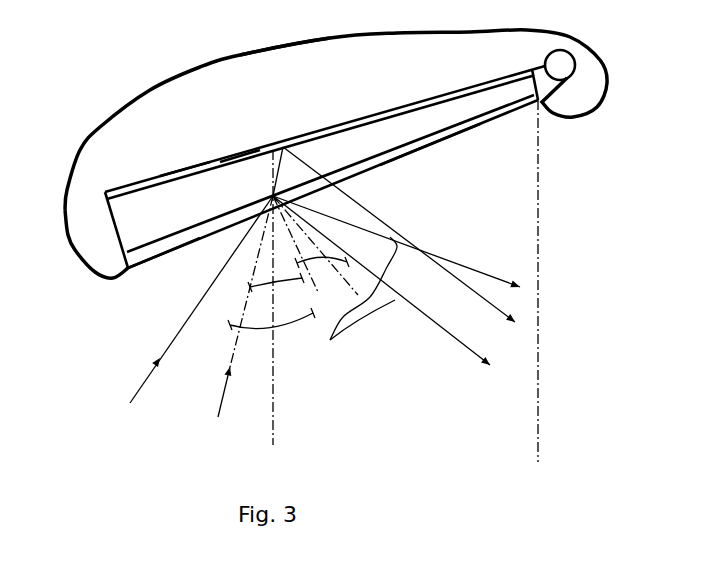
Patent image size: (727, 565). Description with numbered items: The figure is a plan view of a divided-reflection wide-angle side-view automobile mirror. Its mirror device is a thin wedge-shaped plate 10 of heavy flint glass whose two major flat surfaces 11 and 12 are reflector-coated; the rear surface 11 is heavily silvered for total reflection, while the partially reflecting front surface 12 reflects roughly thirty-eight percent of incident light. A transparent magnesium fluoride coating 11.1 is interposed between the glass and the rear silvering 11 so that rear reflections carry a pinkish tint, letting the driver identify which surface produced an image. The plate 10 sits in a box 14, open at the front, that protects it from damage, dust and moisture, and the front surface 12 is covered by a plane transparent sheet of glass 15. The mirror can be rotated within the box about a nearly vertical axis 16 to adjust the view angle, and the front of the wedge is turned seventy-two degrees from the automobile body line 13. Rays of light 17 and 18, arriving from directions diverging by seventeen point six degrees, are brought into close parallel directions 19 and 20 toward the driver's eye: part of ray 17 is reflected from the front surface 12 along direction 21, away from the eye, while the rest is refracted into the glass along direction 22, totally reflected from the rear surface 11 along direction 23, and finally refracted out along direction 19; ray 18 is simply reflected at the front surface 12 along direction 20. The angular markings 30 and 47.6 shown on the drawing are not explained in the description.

The wedge-shaped plate 10 is at (133, 213).
The rear surface 11 is at (145, 176).
The magnesium fluoride coating 11.1 is at (185, 173).
The front surface 12 is at (157, 247).
The automobile body line 13 is at (538, 360).
The box 14 is at (255, 60).
The transparent sheet of glass 15 is at (427, 140).
The vertical axis 16 is at (567, 62).
The ray of light 17 is at (194, 307).
The ray of light 18 is at (239, 318).
The direction 19 is at (405, 246).
The direction 20 is at (390, 293).
The direction 21 is at (399, 241).
The direction 22 is at (273, 195).
The direction 23 is at (283, 150).
The angle of 30 degrees 30 is at (405, 262).
The angle of 47.6 degrees 47.6 is at (195, 313).